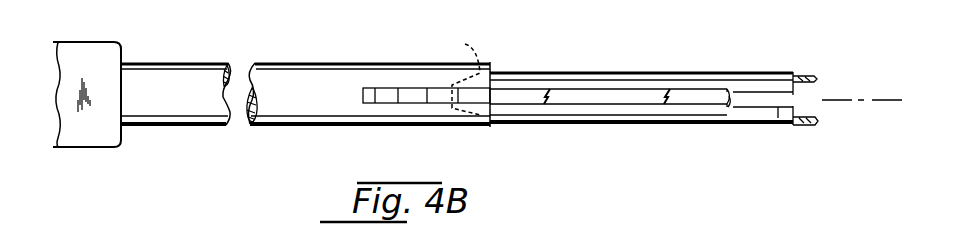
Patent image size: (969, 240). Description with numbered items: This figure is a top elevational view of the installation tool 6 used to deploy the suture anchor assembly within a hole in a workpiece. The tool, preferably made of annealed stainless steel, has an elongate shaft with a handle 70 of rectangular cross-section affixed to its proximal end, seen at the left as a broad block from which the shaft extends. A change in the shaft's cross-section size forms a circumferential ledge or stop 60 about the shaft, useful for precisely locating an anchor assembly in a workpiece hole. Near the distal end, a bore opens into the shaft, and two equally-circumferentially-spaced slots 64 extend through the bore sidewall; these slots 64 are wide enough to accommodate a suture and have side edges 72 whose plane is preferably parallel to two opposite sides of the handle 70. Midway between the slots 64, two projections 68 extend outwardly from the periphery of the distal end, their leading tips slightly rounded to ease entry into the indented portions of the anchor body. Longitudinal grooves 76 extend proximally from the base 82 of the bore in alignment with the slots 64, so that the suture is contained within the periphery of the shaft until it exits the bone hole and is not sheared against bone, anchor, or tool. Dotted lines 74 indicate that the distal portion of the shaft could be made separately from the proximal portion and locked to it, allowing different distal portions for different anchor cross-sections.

The installation tool 6 is at (215, 155).
The circumferential ledge or stop 60 is at (492, 70).
The slots 64 is at (752, 93).
The projections 68 is at (815, 75).
The handle 70 is at (100, 50).
The side edges 72 is at (781, 122).
The dotted lines 74 is at (460, 76).
The grooves 76 is at (627, 97).
The base 82 is at (730, 98).